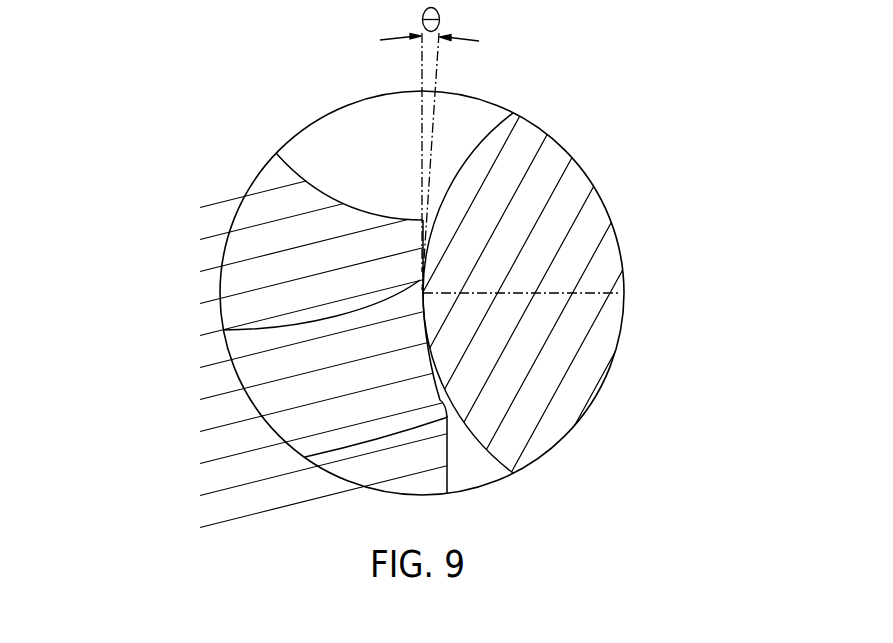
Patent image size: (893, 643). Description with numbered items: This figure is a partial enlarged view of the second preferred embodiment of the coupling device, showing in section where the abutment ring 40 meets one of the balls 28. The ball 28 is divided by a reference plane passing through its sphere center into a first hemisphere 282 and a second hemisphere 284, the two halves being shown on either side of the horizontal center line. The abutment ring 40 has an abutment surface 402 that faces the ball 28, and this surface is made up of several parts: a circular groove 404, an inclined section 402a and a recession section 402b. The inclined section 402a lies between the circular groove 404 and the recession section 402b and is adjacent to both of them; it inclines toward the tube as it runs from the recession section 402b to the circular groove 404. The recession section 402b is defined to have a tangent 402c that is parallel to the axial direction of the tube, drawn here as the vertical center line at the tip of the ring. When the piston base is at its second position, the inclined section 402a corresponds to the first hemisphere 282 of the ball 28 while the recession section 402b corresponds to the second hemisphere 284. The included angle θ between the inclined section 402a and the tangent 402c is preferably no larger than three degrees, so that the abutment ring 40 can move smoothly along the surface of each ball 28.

The abutment ring 40 is at (285, 230).
The circular groove 404 is at (340, 168).
The abutment surface 402 is at (227, 265).
The inclined section 402a is at (223, 330).
The recession section 402b is at (305, 457).
The tangent 402c is at (420, 128).
The ball 28 is at (543, 293).
The first hemisphere 282 is at (588, 228).
The second hemisphere 284 is at (587, 315).